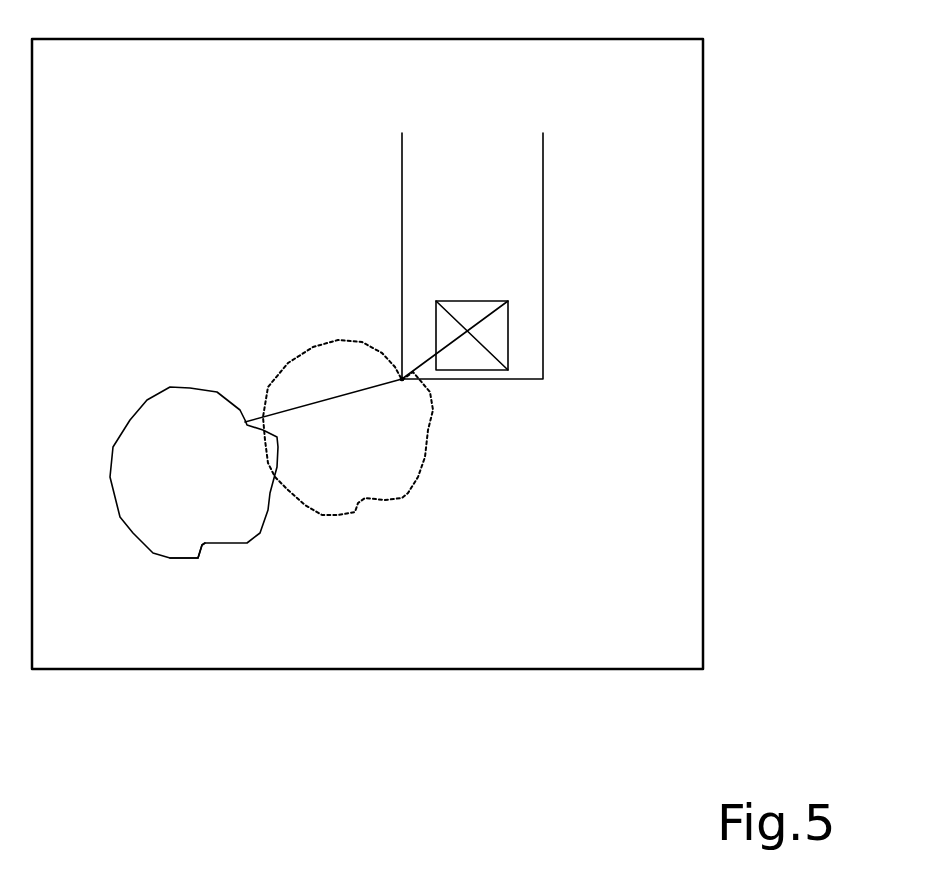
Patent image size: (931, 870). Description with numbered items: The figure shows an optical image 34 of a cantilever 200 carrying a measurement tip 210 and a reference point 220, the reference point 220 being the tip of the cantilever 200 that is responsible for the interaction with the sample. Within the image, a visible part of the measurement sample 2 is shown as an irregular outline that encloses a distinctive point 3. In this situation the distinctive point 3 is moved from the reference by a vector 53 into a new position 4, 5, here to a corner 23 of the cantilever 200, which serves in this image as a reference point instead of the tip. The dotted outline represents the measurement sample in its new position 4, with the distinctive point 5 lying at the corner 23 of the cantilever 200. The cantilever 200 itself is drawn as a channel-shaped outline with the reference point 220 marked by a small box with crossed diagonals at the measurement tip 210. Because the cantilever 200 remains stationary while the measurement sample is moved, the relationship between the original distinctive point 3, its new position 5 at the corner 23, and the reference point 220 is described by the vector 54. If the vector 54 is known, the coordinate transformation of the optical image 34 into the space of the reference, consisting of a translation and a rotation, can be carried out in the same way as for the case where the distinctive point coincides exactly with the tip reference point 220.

The optical image 34 is at (703, 90).
The cantilever 200 is at (543, 170).
The reference point 220 is at (462, 340).
The measurement tip 210 is at (495, 350).
The vector 54 is at (402, 379).
The corner of the cantilever 23 is at (402, 380).
The distinctive point in new position 5 is at (400, 379).
The new position 4 is at (355, 512).
The vector 53 is at (330, 398).
The distinctive point 3 is at (245, 422).
The measurement sample 2 is at (200, 558).